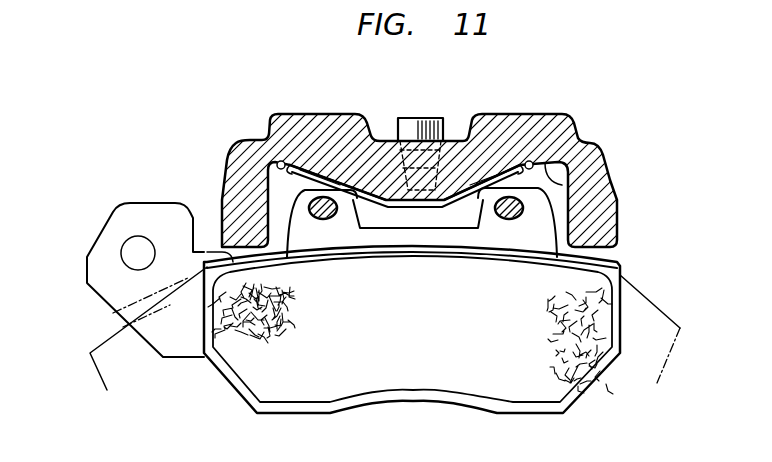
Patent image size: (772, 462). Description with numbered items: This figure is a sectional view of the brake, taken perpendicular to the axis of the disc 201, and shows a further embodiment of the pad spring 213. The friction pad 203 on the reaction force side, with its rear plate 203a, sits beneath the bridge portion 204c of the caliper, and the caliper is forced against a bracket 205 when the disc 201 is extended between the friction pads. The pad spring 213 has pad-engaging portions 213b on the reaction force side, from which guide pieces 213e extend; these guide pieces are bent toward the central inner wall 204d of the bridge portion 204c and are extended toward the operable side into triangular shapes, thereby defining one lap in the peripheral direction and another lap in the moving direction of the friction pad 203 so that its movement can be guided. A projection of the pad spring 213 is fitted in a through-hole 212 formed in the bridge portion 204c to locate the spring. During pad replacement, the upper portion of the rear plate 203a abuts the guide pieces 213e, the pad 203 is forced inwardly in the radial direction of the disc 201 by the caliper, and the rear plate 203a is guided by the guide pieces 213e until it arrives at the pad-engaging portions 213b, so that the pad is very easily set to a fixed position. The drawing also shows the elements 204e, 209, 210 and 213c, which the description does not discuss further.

The disc 201 is at (655, 312).
The friction pad 203 is at (403, 416).
The rear plate 203a is at (447, 400).
The bridge portion 204c is at (479, 120).
The central inner wall 204d is at (283, 160).
The caliper central boss portion 204e is at (388, 140).
The bracket 205 is at (133, 198).
The guide pin 209 is at (319, 219).
The bolt head 210 is at (412, 118).
The through-hole 212 is at (461, 140).
The pad spring 213 is at (431, 218).
The pad-engaging portions 213b is at (337, 170).
The central portion of pad spring 213c is at (413, 207).
The guide pieces 213e is at (290, 176).